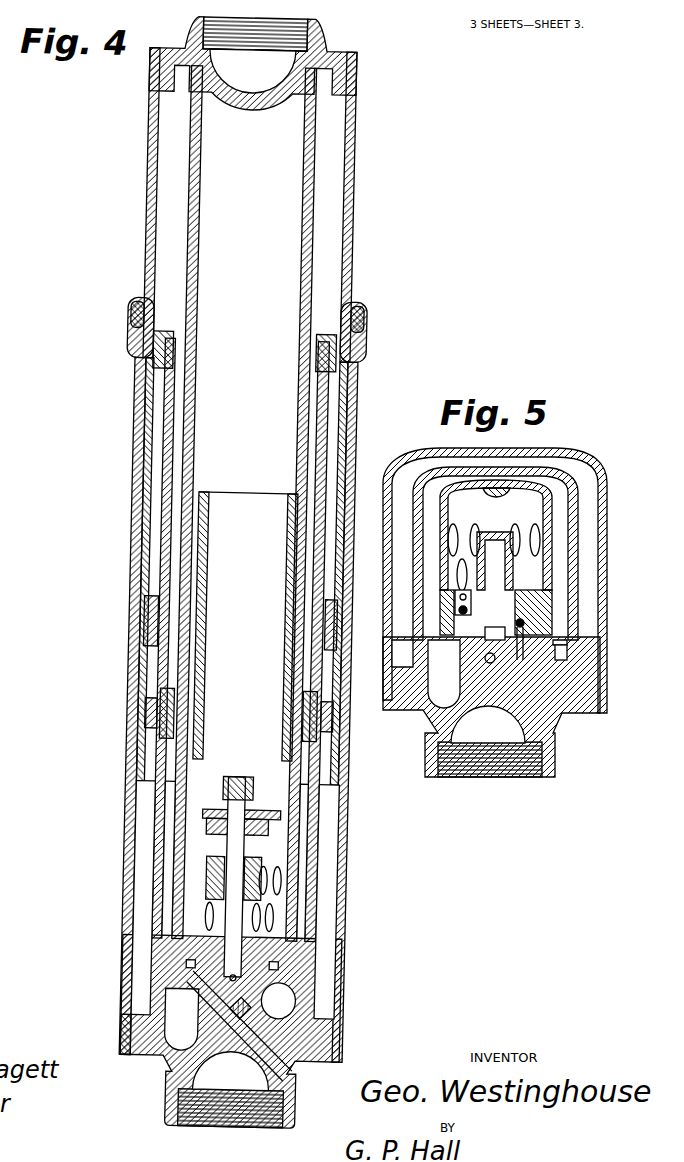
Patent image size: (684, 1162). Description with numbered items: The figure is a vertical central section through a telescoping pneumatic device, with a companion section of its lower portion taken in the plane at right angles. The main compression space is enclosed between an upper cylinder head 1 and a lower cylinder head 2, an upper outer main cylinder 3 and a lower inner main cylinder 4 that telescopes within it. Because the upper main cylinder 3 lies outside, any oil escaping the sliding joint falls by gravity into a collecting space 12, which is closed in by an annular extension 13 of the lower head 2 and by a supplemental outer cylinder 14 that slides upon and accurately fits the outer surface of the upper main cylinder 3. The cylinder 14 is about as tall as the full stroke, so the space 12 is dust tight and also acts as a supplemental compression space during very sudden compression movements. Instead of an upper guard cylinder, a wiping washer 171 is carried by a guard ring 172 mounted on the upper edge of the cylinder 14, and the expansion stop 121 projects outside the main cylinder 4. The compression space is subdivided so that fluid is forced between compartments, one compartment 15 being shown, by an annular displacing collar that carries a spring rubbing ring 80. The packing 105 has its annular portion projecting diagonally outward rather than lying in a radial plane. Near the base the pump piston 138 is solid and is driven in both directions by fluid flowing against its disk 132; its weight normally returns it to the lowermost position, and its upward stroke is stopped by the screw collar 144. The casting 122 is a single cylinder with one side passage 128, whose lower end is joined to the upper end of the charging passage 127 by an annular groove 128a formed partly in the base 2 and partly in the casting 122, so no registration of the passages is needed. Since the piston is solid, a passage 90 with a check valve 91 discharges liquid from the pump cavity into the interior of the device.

In FIG. 4, the upper cylinder head 1 is at (322, 60).
In FIG. 4, the lower cylinder head 2 is at (306, 1086).
In FIG. 5, the lower cylinder head 2 is at (545, 740).
In FIG. 4, the upper outer main cylinder 3 is at (148, 181).
In FIG. 5, the lower inner main cylinder 4 is at (579, 512).
In FIG. 4, the collecting space 12 is at (160, 880).
In FIG. 5, the collecting space 12 is at (586, 590).
In FIG. 4, the annular extension 13 is at (226, 954).
In FIG. 5, the annular extension 13 is at (590, 717).
In FIG. 4, the supplemental outer cylinder 14 is at (146, 962).
In FIG. 5, the supplemental outer cylinder 14 is at (602, 480).
In FIG. 4, the compartment 15 is at (245, 626).
In FIG. 4, the spring rubbing ring 80 is at (176, 740).
In FIG. 5, the passage 90 is at (455, 614).
In FIG. 5, the check valve 91 is at (455, 600).
In FIG. 4, the packing 105 is at (338, 745).
In FIG. 4, the stop 121 is at (147, 352).
In FIG. 4, the casting 122 is at (203, 524).
In FIG. 5, the casting 122 is at (550, 546).
In FIG. 4, the charging passage 127 is at (297, 1037).
In FIG. 5, the charging passage 127 is at (490, 664).
In FIG. 4, the passage 128 is at (197, 591).
In FIG. 5, the passage 128 is at (497, 492).
In FIG. 4, the annular groove 128a is at (300, 965).
In FIG. 4, the disk 132 is at (300, 827).
In FIG. 4, the piston 138 is at (256, 921).
In FIG. 4, the screw collar 144 is at (288, 860).
In FIG. 4, the wiping washer 171 is at (372, 318).
In FIG. 4, the guard ring 172 is at (372, 346).